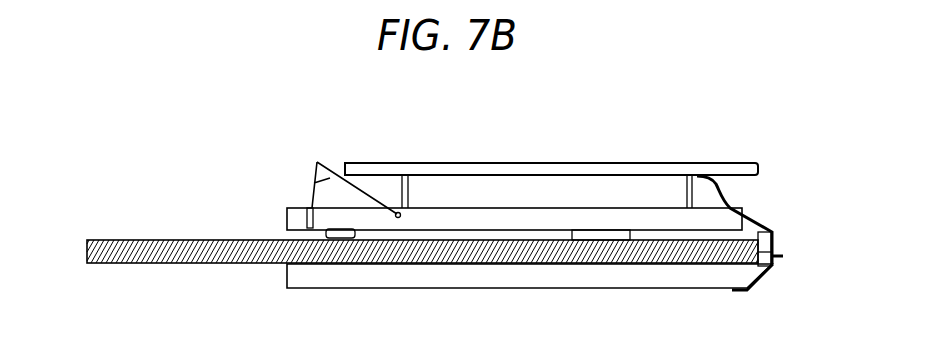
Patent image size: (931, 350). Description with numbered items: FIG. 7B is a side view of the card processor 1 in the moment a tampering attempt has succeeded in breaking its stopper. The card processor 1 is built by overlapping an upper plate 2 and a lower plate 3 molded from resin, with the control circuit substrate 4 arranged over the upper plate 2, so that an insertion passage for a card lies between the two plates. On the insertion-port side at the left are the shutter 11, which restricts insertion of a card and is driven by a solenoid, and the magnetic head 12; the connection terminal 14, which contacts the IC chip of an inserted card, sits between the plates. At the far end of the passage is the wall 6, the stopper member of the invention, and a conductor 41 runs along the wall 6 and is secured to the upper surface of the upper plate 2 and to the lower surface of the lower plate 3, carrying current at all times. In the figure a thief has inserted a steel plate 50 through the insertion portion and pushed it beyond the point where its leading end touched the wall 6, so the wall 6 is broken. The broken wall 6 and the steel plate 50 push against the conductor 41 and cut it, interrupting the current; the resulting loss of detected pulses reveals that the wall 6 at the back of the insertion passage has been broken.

The card processor 1 is at (640, 144).
The upper plate 2 is at (500, 216).
The lower plate 3 is at (630, 287).
The control circuit substrate 4 is at (758, 170).
The wall 6 is at (785, 257).
The shutter 11 is at (328, 167).
The magnetic head 12 is at (306, 226).
The connection terminal 14 is at (590, 236).
The conductor 41 is at (763, 227).
The steel plate 50 is at (130, 239).